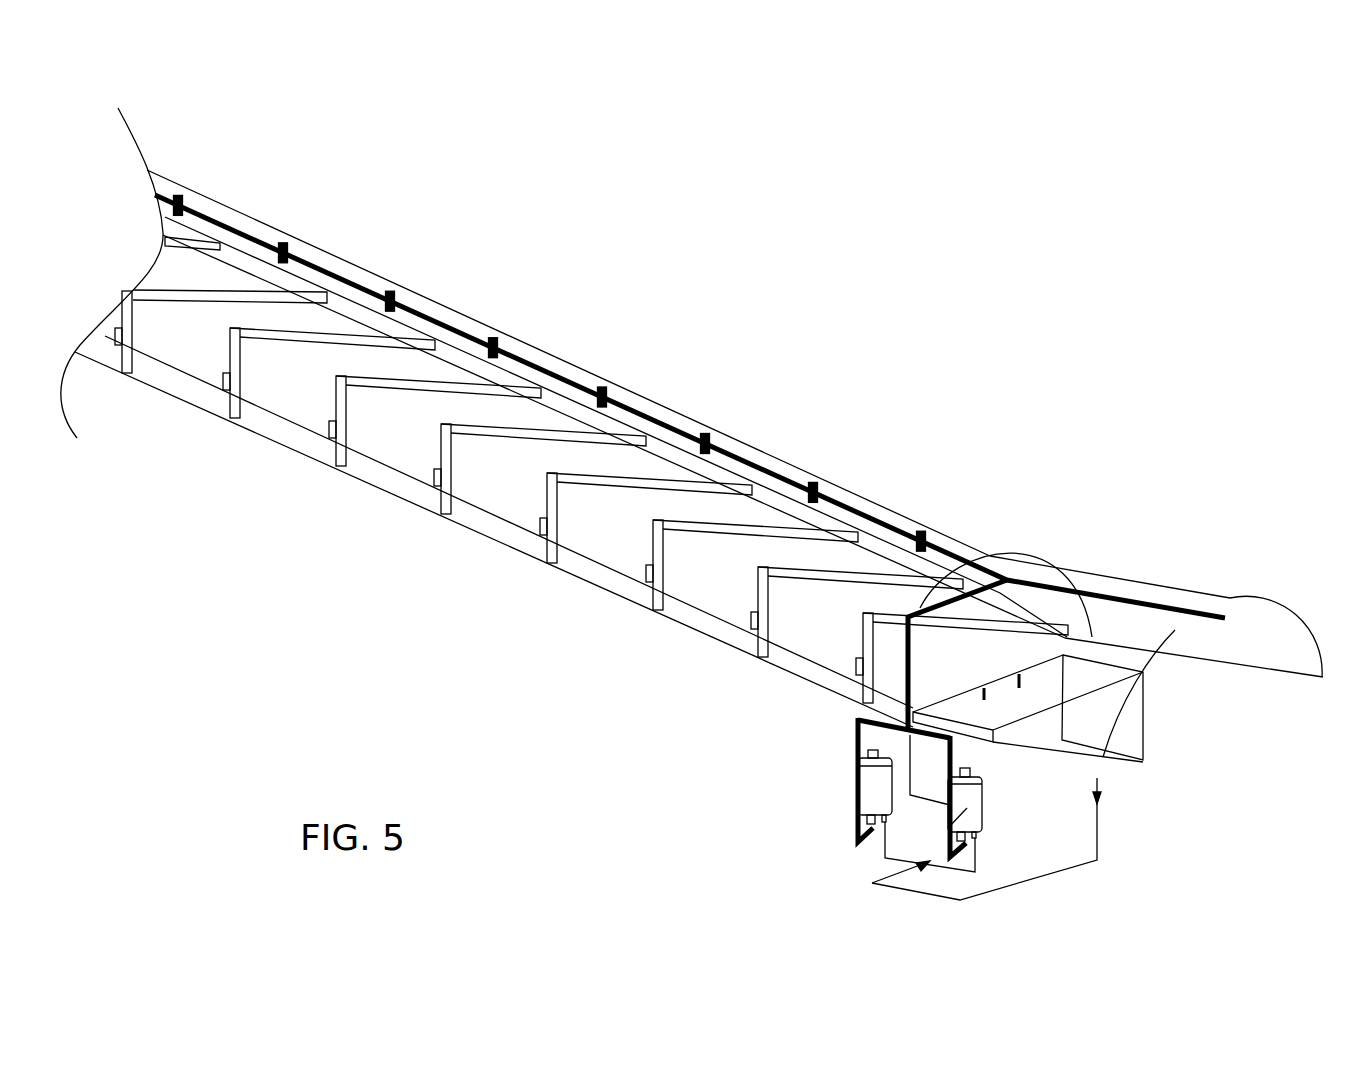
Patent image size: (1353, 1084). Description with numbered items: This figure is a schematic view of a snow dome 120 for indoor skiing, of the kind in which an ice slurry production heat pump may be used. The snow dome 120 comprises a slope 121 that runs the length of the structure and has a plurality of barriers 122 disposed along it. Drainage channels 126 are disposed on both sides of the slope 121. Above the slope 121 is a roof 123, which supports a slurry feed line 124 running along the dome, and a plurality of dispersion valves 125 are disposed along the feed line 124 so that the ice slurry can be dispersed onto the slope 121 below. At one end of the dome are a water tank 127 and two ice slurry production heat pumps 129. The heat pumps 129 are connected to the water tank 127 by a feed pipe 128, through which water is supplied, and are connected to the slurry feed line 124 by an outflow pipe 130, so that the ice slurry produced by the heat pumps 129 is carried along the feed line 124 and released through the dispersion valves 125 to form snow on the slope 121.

The snow dome 120 is at (682, 218).
The slope 121 is at (256, 438).
The barriers 122 is at (748, 627).
The roof 123 is at (1027, 552).
The slurry feed line 124 is at (852, 515).
The dispersion valves 125 is at (608, 395).
The drainage channels 126 is at (563, 417).
The water tank 127 is at (1108, 777).
The feed pipe 128 is at (1030, 883).
The ice slurry production heat pumps 129 is at (877, 787).
The outflow pipe 130 is at (922, 608).